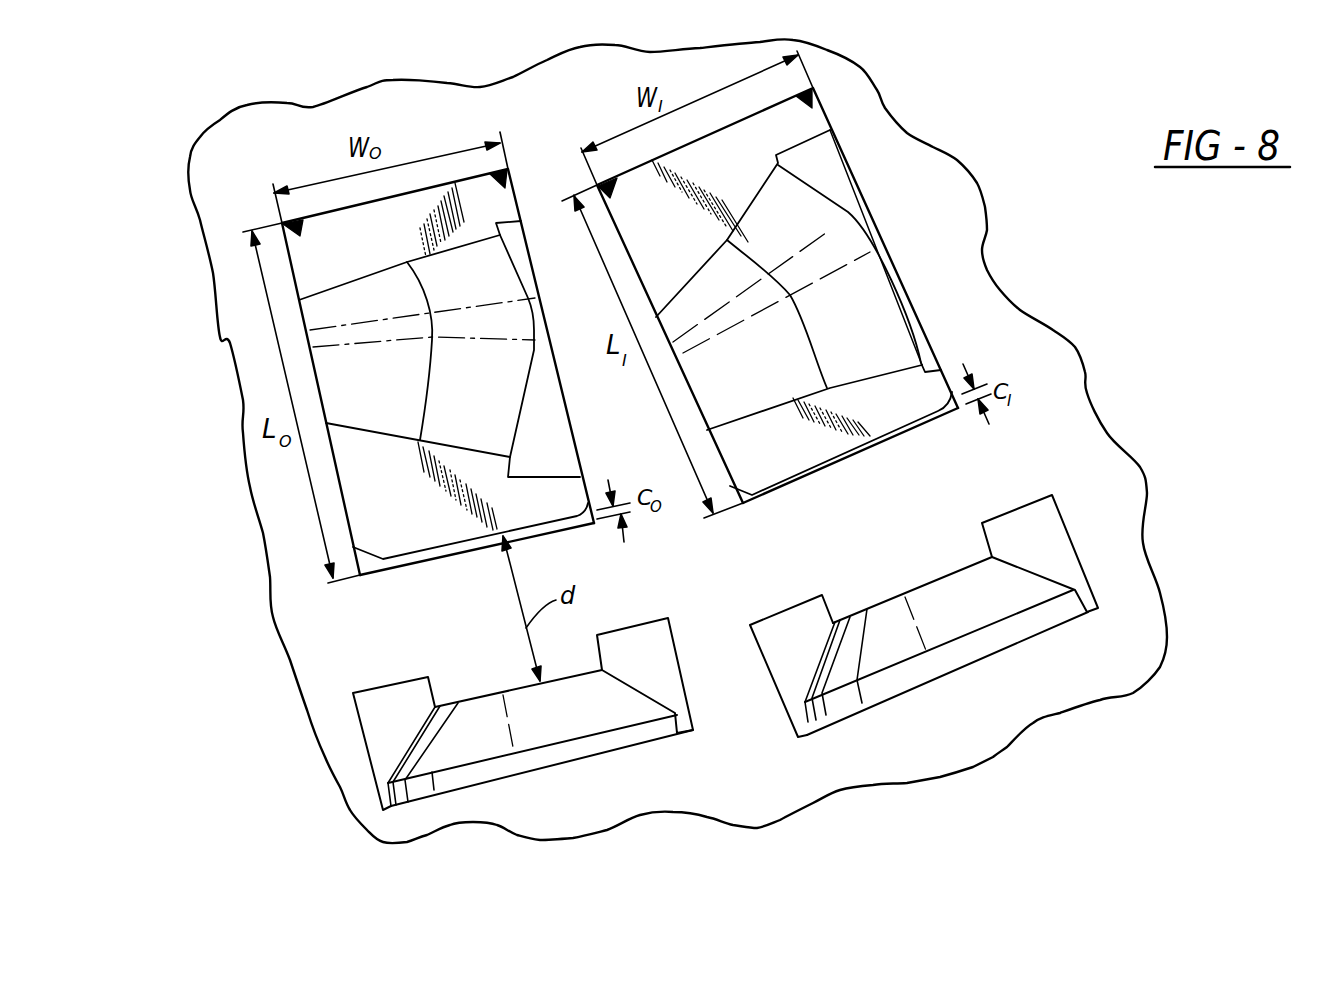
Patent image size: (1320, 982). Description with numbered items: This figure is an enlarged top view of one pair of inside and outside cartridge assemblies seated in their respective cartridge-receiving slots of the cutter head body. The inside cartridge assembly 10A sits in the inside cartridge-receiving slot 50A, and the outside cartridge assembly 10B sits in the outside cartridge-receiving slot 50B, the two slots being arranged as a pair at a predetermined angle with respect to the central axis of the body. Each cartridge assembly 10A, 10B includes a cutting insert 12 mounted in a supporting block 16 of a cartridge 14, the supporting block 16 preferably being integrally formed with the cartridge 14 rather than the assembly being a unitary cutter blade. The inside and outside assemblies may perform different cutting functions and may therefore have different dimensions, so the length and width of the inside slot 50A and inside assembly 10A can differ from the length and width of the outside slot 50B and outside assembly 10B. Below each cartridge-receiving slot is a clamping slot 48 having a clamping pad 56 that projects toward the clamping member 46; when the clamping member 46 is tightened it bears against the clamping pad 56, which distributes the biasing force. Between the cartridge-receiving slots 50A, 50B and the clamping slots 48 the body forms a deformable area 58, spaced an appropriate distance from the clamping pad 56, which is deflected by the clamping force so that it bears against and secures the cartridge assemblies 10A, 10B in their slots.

The inside cartridge assembly 10A is at (870, 168).
The outside cartridge assembly 10B is at (277, 173).
The cutting insert 12 is at (463, 282).
The cartridge 14 is at (422, 500).
The supporting block 16 is at (357, 300).
The clamping member 46 is at (548, 725).
The clamping slot 48 is at (387, 712).
The inside cartridge-receiving slot 50A is at (950, 400).
The outside cartridge-receiving slot 50B is at (442, 575).
The clamping pad 56 is at (892, 587).
The deformable area 58 is at (501, 624).